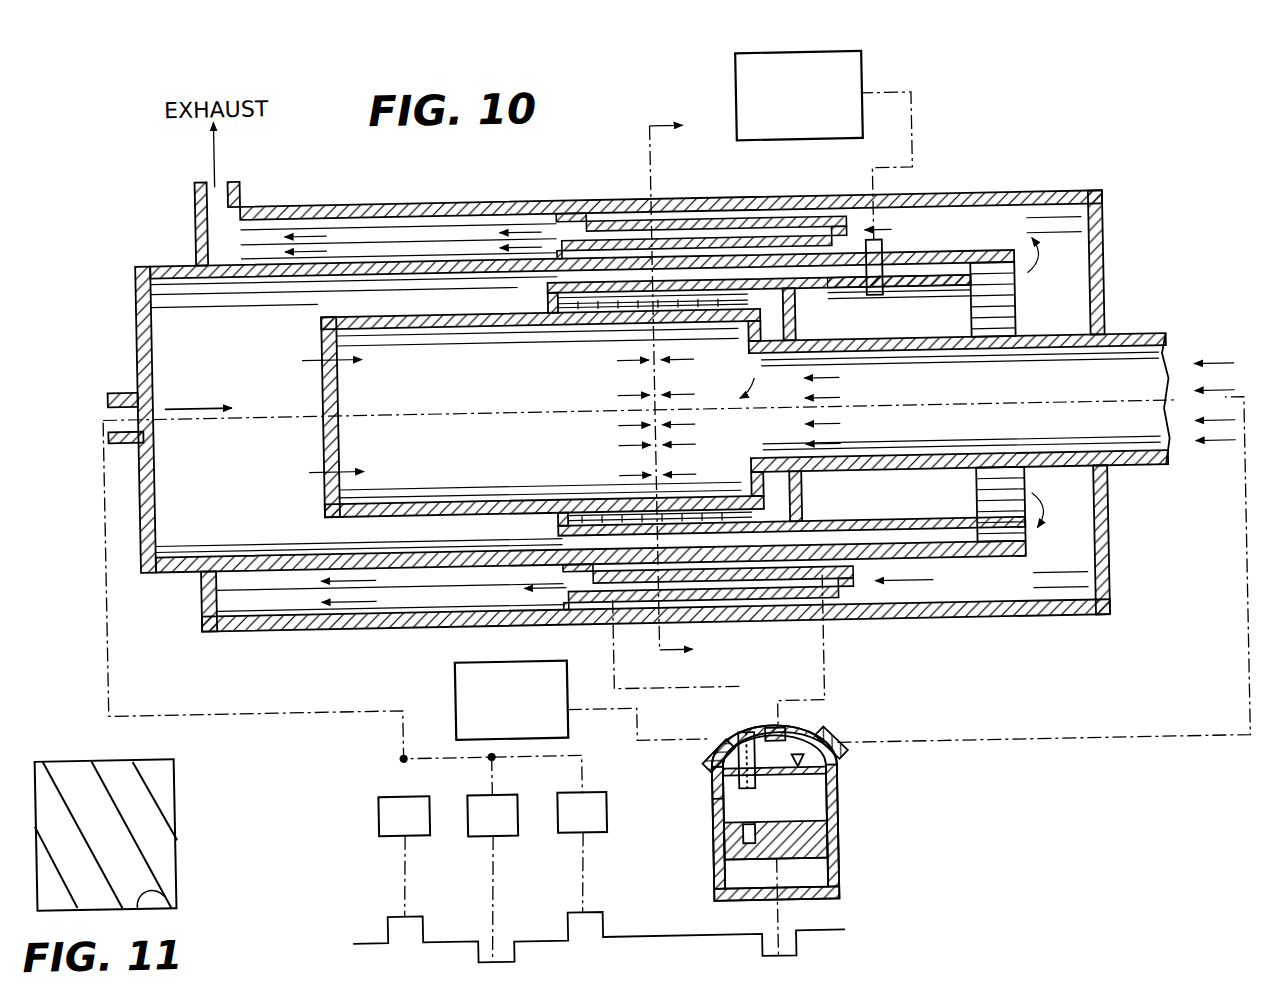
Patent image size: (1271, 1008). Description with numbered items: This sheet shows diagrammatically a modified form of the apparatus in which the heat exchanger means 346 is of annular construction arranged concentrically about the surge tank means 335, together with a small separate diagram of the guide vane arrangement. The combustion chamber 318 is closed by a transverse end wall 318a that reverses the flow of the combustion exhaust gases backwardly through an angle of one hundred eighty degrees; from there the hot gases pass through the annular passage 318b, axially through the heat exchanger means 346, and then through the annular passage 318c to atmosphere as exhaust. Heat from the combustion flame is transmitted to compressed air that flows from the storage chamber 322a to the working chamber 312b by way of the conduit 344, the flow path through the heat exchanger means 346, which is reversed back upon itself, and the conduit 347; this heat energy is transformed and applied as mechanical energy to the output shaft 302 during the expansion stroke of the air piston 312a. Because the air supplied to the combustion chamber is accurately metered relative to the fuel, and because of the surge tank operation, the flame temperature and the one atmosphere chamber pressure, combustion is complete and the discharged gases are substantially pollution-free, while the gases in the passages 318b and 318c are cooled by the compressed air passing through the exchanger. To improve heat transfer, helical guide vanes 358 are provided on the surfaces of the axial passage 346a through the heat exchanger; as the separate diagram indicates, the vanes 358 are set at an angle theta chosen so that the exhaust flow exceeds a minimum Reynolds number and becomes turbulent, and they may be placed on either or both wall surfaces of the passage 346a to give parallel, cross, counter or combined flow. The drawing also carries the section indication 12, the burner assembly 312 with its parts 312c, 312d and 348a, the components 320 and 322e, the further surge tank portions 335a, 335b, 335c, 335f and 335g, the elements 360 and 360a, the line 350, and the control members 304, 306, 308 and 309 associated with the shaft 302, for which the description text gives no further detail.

In FIG. 10, the section line 12 is at (673, 390).
In FIG. 10, the output shaft 302 is at (632, 935).
In FIG. 10, the fuel valve 304 is at (371, 830).
In FIG. 10, the air valve 306 is at (477, 822).
In FIG. 10, the control valve 308 is at (570, 814).
In FIG. 10, the control line 309 is at (292, 714).
In FIG. 10, the burner 312 is at (819, 829).
In FIG. 10, the air piston 312a is at (835, 875).
In FIG. 10, the working chamber 312b is at (775, 798).
In FIG. 10, the fuel injector 312c is at (704, 757).
In FIG. 10, the air injector 312d is at (835, 745).
In FIG. 10, the combustion chamber 318 is at (624, 199).
In FIG. 10, the transverse end wall 318a is at (1108, 255).
In FIG. 10, the annular passage 318b is at (990, 230).
In FIG. 10, the annular passage 318c is at (374, 232).
In FIG. 10, the igniter 320 is at (887, 218).
In FIG. 10, the storage chamber 322a is at (759, 751).
In FIG. 10, the fuel inlet 322e is at (780, 722).
In FIG. 10, the surge tank means 335 is at (520, 272).
In FIG. 10, the inner casing 335a is at (456, 288).
In FIG. 10, the end wall 335b is at (343, 352).
In FIG. 10, the combustion chamber 335c is at (529, 413).
In FIG. 10, the heat exchange passage 335f is at (630, 338).
In FIG. 10, the support post 335g is at (802, 496).
In FIG. 10, the conduit 344 is at (824, 645).
In FIG. 10, the heat exchanger means 346 is at (679, 197).
In FIG. 10, the axial passage 346a is at (770, 220).
In FIG. 10, the conduit 347 is at (682, 690).
In FIG. 10, the burner wall 348a is at (706, 800).
In FIG. 10, the return line 350 is at (1060, 746).
In FIG. 11, the helical guide vanes 358 is at (112, 805).
In FIG. 10, the heating element 360 is at (570, 318).
In FIG. 10, the heating element section 360a is at (930, 293).